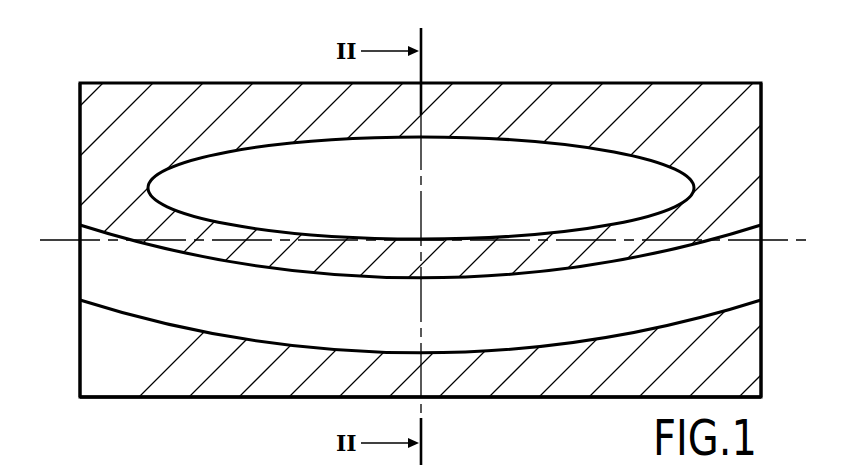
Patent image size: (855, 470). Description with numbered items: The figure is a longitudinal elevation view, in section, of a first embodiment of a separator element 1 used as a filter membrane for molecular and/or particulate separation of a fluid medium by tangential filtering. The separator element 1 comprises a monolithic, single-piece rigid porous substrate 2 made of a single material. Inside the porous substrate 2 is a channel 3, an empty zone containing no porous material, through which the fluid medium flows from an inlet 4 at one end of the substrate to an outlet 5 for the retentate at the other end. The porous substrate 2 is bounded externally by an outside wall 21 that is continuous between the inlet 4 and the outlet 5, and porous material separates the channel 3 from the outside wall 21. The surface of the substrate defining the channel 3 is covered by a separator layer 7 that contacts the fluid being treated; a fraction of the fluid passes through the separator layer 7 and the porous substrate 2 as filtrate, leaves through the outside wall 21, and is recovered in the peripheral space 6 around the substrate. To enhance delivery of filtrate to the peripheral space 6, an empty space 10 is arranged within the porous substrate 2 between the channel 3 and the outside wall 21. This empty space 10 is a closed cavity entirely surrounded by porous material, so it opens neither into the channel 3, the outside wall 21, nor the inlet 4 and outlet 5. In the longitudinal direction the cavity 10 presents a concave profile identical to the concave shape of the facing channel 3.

The separator element 1 is at (73, 99).
The porous substrate 2 is at (277, 379).
The outside wall 21 is at (535, 398).
The channel 3 is at (411, 329).
The inlet 4 is at (78, 286).
The outlet 5 is at (763, 291).
The peripheral space 6 is at (568, 70).
The separator layer 7 is at (258, 341).
The empty space 10 is at (411, 199).